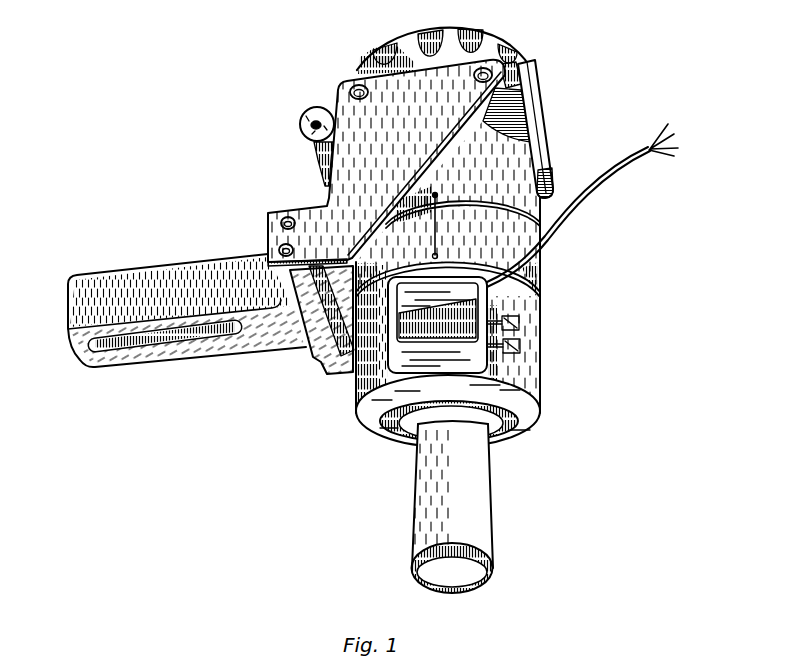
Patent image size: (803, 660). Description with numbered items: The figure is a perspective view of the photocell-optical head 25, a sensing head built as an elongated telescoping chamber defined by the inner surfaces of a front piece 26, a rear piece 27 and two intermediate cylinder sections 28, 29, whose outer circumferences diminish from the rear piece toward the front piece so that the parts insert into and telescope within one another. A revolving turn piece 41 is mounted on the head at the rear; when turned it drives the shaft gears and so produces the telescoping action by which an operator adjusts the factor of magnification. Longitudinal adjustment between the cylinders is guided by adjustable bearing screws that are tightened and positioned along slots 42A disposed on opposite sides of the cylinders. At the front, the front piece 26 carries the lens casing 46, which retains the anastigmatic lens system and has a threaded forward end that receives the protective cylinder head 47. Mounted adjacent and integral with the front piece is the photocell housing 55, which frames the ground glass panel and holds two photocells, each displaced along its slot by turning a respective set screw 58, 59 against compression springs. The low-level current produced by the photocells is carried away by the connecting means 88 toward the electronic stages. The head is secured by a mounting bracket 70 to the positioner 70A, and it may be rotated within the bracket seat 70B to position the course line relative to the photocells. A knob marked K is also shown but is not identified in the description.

The revolving turn piece 41 is at (492, 52).
The mounting bracket 70 is at (350, 108).
The adjusting knob K is at (300, 118).
The bracket seat 70B is at (532, 115).
The rear piece 27 is at (520, 158).
The slots 42A is at (437, 222).
The connecting means 88 is at (592, 177).
The positioner 70A is at (153, 277).
The intermediate cylinder section 28 is at (530, 276).
The intermediate cylinder section 29 is at (517, 302).
The set screw 59 is at (516, 329).
The set screw 58 is at (520, 353).
The photocell housing 55 is at (407, 357).
The front piece 26 is at (527, 385).
The photocell-optical head 25 is at (547, 442).
The lens casing 46 is at (497, 443).
The protective cylinder head 47 is at (473, 495).